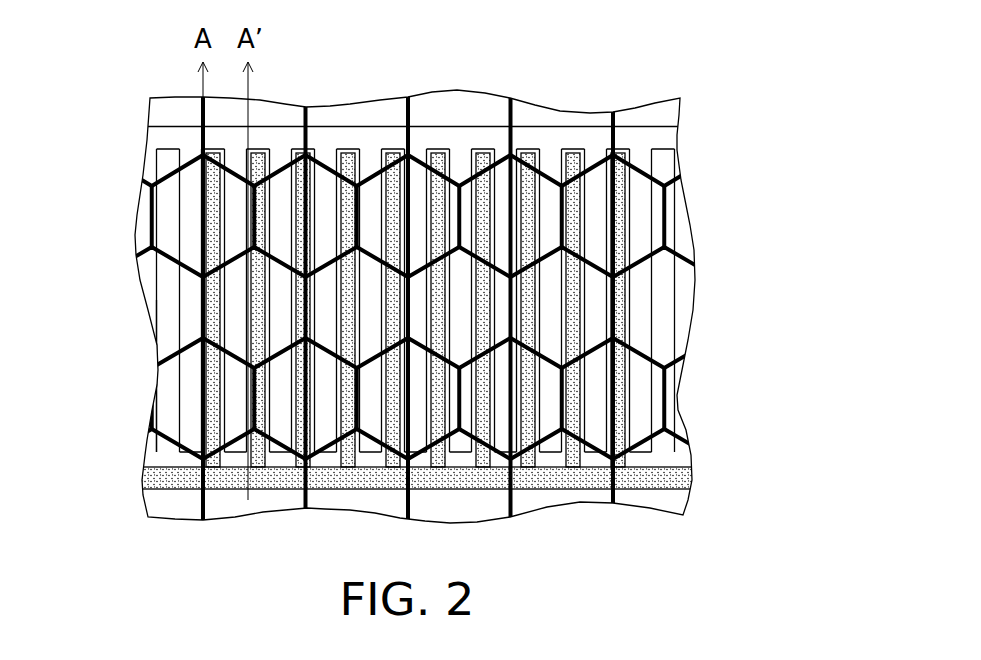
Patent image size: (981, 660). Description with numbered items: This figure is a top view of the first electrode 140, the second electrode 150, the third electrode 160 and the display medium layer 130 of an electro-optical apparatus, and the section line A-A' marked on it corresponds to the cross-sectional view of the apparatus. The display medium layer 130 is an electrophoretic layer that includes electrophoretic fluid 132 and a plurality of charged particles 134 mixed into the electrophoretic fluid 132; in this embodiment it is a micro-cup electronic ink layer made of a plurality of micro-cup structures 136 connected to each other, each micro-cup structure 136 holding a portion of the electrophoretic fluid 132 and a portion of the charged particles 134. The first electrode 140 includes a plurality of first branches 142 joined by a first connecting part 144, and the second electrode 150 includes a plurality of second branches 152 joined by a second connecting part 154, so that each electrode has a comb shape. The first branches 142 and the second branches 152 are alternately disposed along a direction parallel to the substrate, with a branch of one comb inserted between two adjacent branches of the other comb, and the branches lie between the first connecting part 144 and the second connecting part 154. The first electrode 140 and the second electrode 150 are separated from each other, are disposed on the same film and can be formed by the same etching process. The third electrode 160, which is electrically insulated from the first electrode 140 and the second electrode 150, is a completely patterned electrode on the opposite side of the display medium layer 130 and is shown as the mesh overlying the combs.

The display medium layer 130 is at (72, 337).
The electrophoretic fluid 132 is at (172, 398).
The charged particles 134 is at (207, 435).
The micro-cup structures 136 is at (170, 357).
The first electrode 140 is at (770, 402).
The first branches 142 is at (625, 410).
The first connecting part 144 is at (663, 480).
The second electrode 150 is at (72, 132).
The second branches 152 is at (246, 210).
The second connecting part 154 is at (167, 138).
The third electrode 160 is at (145, 284).